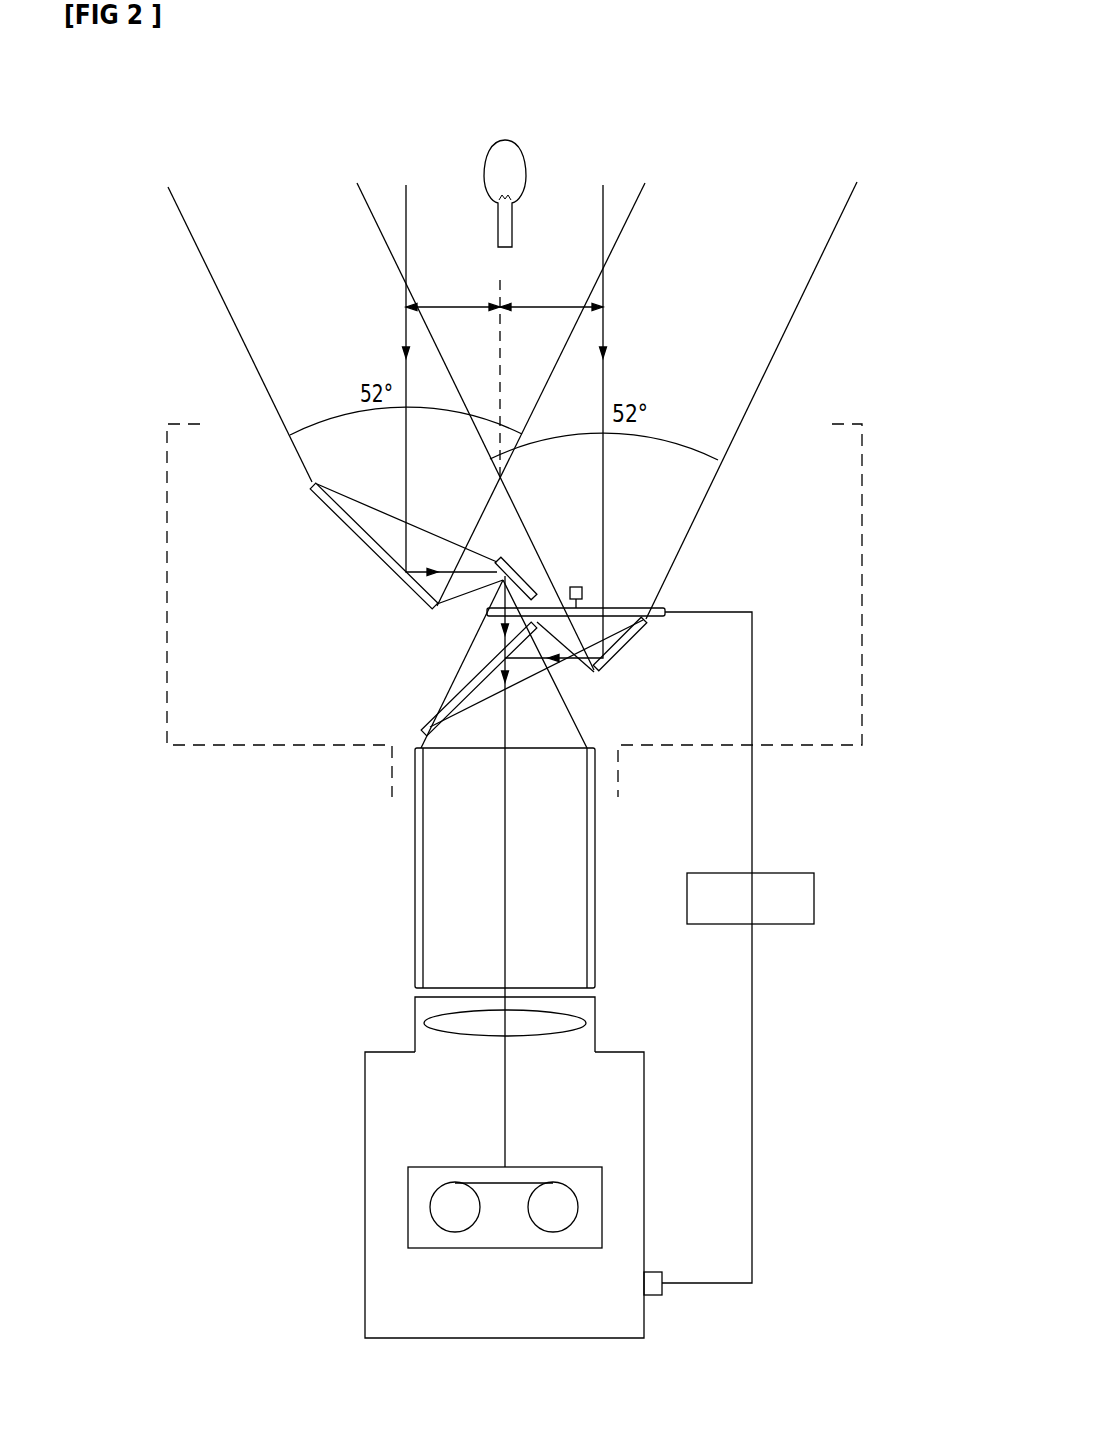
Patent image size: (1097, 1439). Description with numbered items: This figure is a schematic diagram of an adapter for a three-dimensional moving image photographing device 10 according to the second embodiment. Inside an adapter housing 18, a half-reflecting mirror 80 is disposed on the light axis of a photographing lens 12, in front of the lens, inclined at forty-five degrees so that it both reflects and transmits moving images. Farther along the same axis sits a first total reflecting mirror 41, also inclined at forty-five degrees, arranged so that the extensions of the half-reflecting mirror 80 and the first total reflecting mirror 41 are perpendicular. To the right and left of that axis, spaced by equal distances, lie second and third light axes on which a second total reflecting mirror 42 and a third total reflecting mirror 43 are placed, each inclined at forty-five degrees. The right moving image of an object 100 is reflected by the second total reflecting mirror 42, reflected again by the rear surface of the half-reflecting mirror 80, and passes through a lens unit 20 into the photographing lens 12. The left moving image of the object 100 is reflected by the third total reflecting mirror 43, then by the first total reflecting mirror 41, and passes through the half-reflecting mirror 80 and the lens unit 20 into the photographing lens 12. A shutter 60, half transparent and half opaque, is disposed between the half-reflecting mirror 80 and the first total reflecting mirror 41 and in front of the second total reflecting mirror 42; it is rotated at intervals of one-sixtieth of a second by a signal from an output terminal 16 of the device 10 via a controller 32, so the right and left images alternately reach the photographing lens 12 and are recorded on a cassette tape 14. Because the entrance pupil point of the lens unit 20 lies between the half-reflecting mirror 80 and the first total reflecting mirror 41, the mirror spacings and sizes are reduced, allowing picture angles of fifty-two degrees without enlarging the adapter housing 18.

The three-dimensional moving image photographing device 10 is at (375, 1105).
The photographing lens 12 is at (427, 1022).
The cassette tape 14 is at (408, 1203).
The output terminal 16 is at (665, 1288).
The adapter housing 18 is at (864, 565).
The lens unit 20 is at (415, 880).
The controller 32 is at (816, 896).
The first total reflecting mirror 41 is at (523, 580).
The second total reflecting mirror 42 is at (627, 643).
The third total reflecting mirror 43 is at (352, 530).
The shutter 60 is at (610, 603).
The half-reflecting mirror 80 is at (472, 680).
The object 100 is at (505, 150).